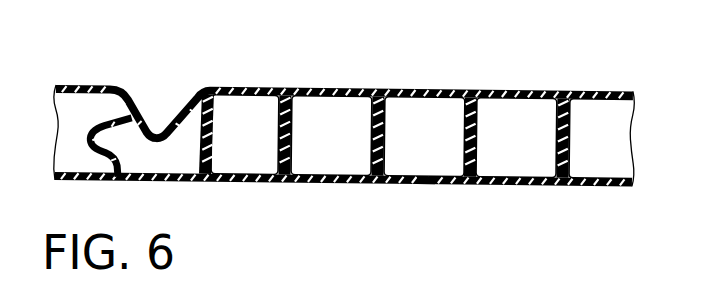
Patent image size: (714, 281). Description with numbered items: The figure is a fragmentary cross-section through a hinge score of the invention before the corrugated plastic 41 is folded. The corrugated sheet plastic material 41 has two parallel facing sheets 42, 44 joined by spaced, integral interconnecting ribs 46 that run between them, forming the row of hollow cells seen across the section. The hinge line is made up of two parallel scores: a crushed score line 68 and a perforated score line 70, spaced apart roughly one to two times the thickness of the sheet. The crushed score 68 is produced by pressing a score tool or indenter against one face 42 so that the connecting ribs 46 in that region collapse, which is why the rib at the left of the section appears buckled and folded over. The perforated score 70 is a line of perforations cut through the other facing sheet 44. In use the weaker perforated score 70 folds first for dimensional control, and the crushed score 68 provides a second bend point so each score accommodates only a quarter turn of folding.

The corrugated sheet plastic material 41 is at (343, 130).
The facing sheet 42 is at (580, 92).
The facing sheet 44 is at (309, 186).
The interconnecting rib 46 is at (386, 122).
The crushed score line 68 is at (141, 117).
The perforated score line 70 is at (427, 187).